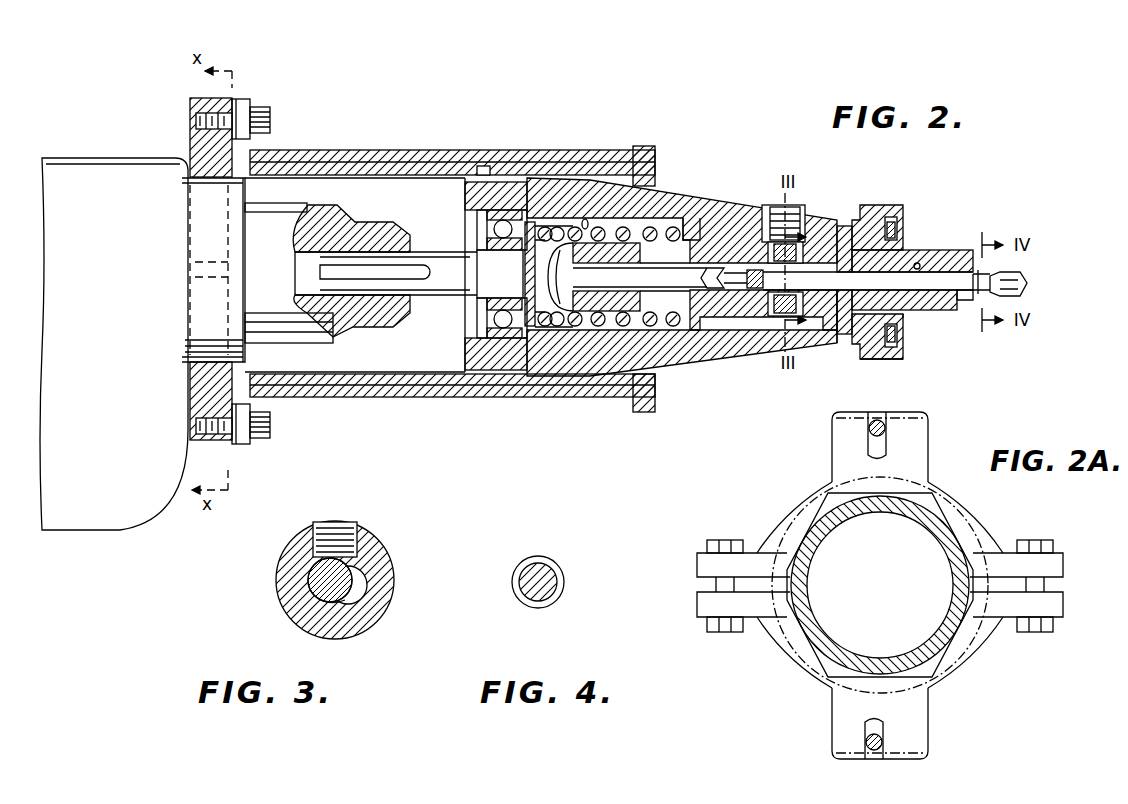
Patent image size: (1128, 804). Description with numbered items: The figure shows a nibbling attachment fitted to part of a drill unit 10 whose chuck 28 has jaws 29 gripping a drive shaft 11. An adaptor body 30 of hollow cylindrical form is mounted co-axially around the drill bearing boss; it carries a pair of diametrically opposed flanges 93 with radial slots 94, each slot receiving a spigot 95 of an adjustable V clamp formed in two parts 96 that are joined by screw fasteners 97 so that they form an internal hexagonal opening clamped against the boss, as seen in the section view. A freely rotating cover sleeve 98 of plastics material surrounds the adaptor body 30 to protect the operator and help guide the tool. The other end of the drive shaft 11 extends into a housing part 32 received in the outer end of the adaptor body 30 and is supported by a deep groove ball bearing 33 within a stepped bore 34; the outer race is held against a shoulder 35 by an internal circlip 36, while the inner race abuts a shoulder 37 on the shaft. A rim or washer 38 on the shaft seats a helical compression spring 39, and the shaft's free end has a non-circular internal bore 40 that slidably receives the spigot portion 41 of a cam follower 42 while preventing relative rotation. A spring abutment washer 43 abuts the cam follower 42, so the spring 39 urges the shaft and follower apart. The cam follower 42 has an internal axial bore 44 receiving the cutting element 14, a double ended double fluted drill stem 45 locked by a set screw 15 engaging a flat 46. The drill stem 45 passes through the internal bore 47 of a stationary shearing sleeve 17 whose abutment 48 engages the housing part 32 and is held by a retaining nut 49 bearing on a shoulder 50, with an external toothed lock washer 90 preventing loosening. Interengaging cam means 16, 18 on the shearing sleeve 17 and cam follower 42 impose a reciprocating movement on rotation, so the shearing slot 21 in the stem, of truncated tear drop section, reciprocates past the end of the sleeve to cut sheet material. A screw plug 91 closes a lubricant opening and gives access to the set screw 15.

In FIG. 2, the drill unit 10 is at (82, 505).
In FIG. 2A, the drill unit 10 is at (859, 582).
In FIG. 2, the drive shaft 11 is at (448, 277).
In FIG. 2, the cutting element 14 is at (828, 275).
In FIG. 3, the cutting element 14 is at (313, 573).
In FIG. 2, the set screw 15 is at (758, 233).
In FIG. 3, the set screw 15 is at (315, 533).
In FIG. 2, the cam means 16 is at (822, 250).
In FIG. 2, the shearing sleeve 17 is at (845, 307).
In FIG. 2, the cam means 18 is at (818, 307).
In FIG. 2, the shearing slot 21 is at (750, 297).
In FIG. 4, the shearing slot 21 is at (535, 562).
In FIG. 2, the chuck 28 is at (276, 262).
In FIG. 2, the jaws 29 is at (397, 227).
In FIG. 2, the adaptor body 30 is at (343, 380).
In FIG. 2, the housing part 32 is at (535, 338).
In FIG. 2, the bearing 33 is at (503, 340).
In FIG. 2, the stepped bore 34 is at (586, 218).
In FIG. 2, the shoulder 35 is at (540, 327).
In FIG. 2, the internal circlip 36 is at (467, 347).
In FIG. 2, the shoulder 37 is at (507, 220).
In FIG. 2, the rim or washer 38 is at (529, 222).
In FIG. 2, the helical compression spring 39 is at (625, 226).
In FIG. 2, the internal bore 40 is at (573, 280).
In FIG. 2, the spigot portion 41 is at (622, 278).
In FIG. 2, the cam follower 42 is at (713, 300).
In FIG. 3, the cam follower 42 is at (363, 615).
In FIG. 2, the spring abutment washer 43 is at (687, 225).
In FIG. 2, the internal axial bore 44 is at (718, 245).
In FIG. 2, the drill stem 45 is at (1023, 289).
In FIG. 3, the drill stem 45 is at (363, 587).
In FIG. 4, the drill stem 45 is at (563, 572).
In FIG. 2, the flat 46 is at (782, 268).
In FIG. 3, the flat 46 is at (323, 605).
In FIG. 2, the internal bore 47 is at (917, 262).
In FIG. 2, the abutment 48 is at (862, 232).
In FIG. 2, the retaining nut 49 is at (867, 353).
In FIG. 2, the shoulder 50 is at (905, 312).
In FIG. 2, the external toothed lock washer 90 is at (889, 217).
In FIG. 2, the screw plug 91 is at (777, 213).
In FIG. 2, the flanges 93 is at (247, 100).
In FIG. 2A, the flanges 93 is at (895, 472).
In FIG. 2, the radial slots 94 is at (248, 105).
In FIG. 2A, the radial slots 94 is at (860, 450).
In FIG. 2, the spigot 95 is at (190, 117).
In FIG. 2A, the spigot 95 is at (867, 430).
In FIG. 2, the V clamp parts 96 is at (190, 137).
In FIG. 2A, the V clamp parts 96 is at (790, 508).
In FIG. 2A, the screw fasteners 97 is at (727, 545).
In FIG. 2, the cover sleeve 98 is at (343, 149).